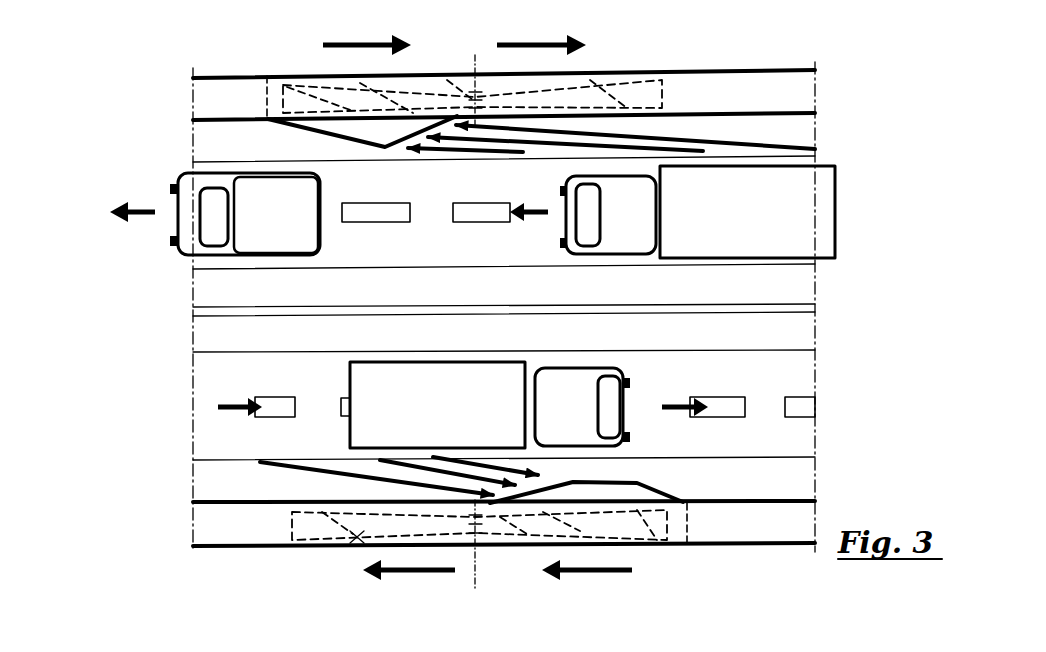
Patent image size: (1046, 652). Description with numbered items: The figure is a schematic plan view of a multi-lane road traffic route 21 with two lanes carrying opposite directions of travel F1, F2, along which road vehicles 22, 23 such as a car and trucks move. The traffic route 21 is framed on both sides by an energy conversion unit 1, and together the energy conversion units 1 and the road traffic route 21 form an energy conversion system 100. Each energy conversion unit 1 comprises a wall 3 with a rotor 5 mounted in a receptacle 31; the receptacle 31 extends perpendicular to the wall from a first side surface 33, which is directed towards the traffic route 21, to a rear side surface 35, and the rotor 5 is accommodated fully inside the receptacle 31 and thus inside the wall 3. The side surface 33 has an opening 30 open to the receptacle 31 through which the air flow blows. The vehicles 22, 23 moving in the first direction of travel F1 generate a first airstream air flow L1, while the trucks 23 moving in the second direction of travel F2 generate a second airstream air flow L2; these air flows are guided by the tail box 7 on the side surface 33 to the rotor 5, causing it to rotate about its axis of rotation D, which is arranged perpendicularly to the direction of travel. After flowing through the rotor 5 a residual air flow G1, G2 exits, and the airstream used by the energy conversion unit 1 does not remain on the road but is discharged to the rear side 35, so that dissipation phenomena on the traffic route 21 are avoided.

The energy conversion unit 1 is at (112, 52).
The wall 3 is at (753, 104).
The rotor 5 is at (590, 83).
The tail box 7 is at (343, 130).
The traffic route 21 is at (852, 306).
The road vehicle 22 is at (282, 224).
The truck 23 is at (752, 224).
The opening 30 is at (345, 108).
The receptacle 31 is at (262, 104).
The side surface 33 is at (763, 123).
The rear side surface 35 is at (752, 66).
The energy conversion system 100 is at (152, 305).
The axis of rotation D is at (475, 60).
The first residual air flow G1 is at (454, 33).
The second residual air flow G2 is at (497, 589).
The first direction of travel F1 is at (137, 208).
The second direction of travel F2 is at (682, 400).
The first airstream air flow L1 is at (662, 132).
The second airstream air flow L2 is at (545, 468).